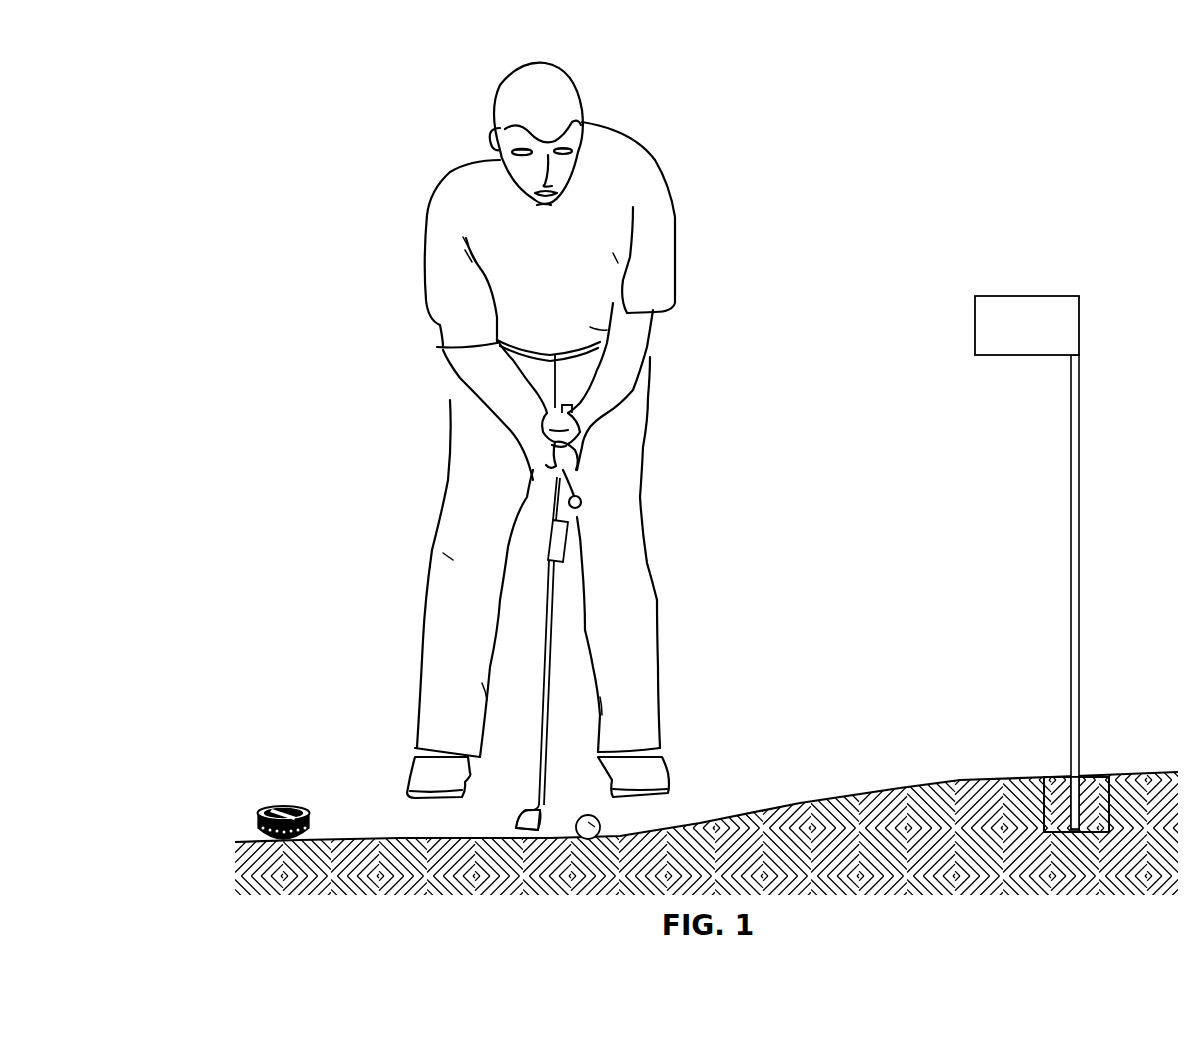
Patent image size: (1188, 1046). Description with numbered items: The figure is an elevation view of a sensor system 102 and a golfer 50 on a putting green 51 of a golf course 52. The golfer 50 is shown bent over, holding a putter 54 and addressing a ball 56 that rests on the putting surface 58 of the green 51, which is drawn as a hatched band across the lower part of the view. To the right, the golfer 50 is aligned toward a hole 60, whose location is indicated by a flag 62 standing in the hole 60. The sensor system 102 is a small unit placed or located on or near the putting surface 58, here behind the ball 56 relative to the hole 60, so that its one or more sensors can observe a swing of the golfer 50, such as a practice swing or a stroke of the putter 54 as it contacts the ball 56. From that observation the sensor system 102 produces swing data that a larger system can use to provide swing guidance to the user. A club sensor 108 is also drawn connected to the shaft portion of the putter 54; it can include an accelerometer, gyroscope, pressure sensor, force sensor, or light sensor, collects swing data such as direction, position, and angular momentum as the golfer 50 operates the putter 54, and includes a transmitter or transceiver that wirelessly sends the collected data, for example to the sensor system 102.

The golfer 50 is at (703, 176).
The putting green 51 is at (850, 772).
The golf course 52 is at (1081, 511).
The putter 54 is at (613, 592).
The ball 56 is at (590, 827).
The putting surface 58 is at (552, 877).
The hole 60 is at (1088, 790).
The flag 62 is at (1082, 513).
The sensor system 102 is at (262, 795).
The club sensor 108 is at (557, 548).